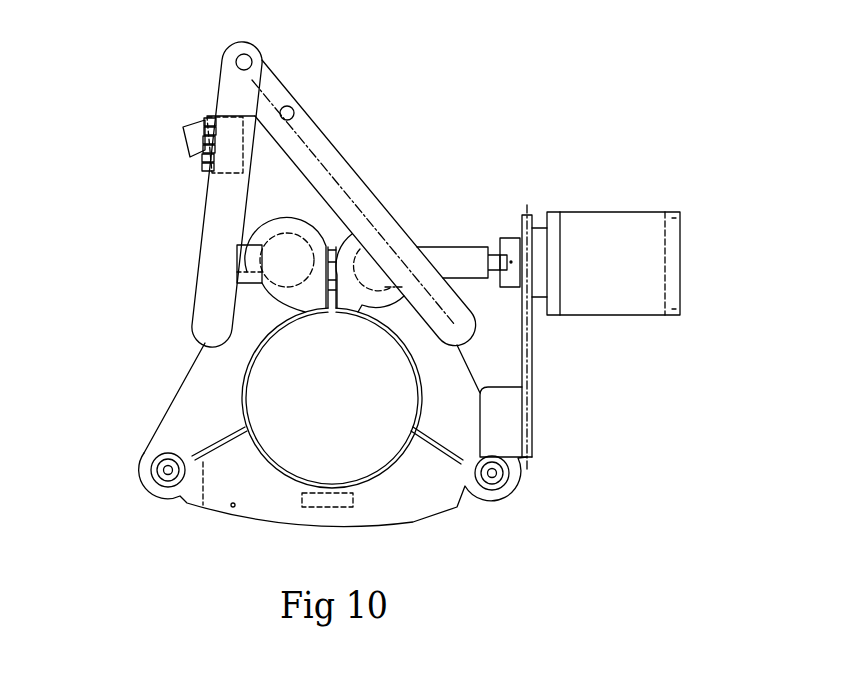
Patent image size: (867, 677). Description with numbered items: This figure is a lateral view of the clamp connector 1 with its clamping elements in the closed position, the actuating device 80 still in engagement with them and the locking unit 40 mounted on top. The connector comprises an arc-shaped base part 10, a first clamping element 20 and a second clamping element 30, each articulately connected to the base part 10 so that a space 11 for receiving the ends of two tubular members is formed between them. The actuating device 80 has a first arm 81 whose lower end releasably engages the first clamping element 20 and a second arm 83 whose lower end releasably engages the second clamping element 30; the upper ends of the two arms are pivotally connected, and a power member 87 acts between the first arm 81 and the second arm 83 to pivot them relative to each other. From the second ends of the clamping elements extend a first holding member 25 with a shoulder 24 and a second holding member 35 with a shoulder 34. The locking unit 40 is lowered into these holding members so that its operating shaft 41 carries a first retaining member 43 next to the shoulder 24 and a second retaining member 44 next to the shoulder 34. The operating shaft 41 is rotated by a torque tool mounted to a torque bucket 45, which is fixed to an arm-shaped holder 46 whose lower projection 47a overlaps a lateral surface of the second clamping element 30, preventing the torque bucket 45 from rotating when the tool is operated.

The clamp connector 1 is at (119, 432).
The base part 10 is at (403, 503).
The space 11 is at (283, 440).
The first clamping element 20 is at (197, 390).
The shoulder 24 is at (292, 240).
The first holding member 25 is at (312, 228).
The second clamping element 30 is at (455, 368).
The shoulder 34 is at (355, 258).
The second holding member 35 is at (350, 238).
The locking unit 40 is at (545, 186).
The operating shaft 41 is at (460, 258).
The first retaining member 43 is at (287, 277).
The second retaining member 44 is at (377, 280).
The torque bucket 45 is at (608, 220).
The holder 46 is at (525, 348).
The projection 47a is at (487, 420).
The actuating device 80 is at (340, 97).
The first arm 81 is at (212, 213).
The second arm 83 is at (337, 160).
The power member 87 is at (195, 125).